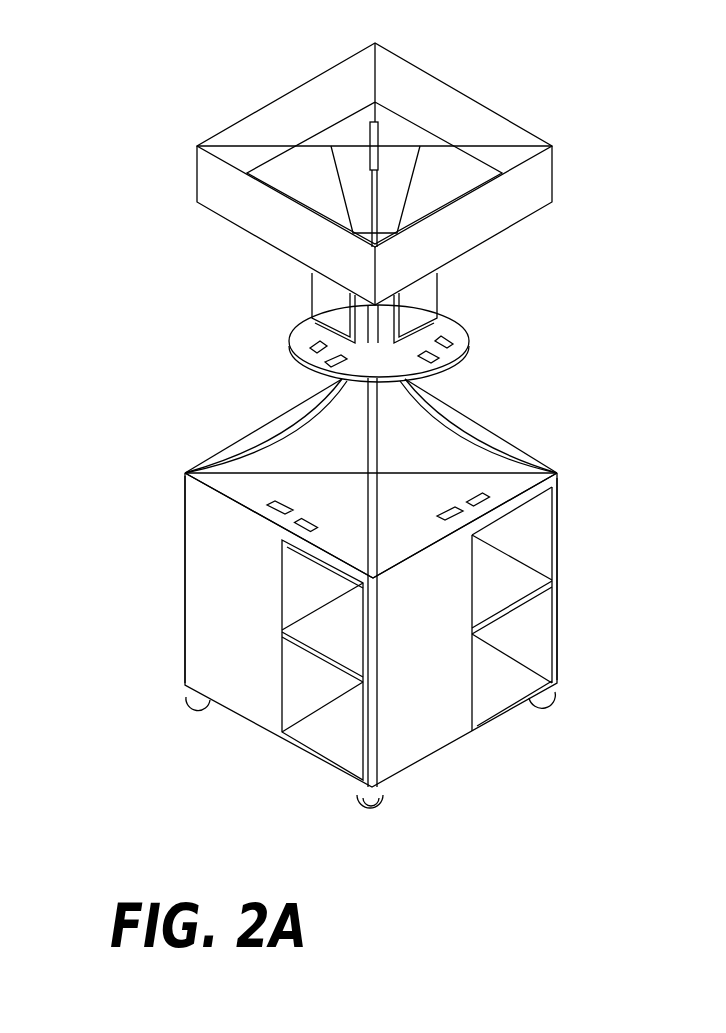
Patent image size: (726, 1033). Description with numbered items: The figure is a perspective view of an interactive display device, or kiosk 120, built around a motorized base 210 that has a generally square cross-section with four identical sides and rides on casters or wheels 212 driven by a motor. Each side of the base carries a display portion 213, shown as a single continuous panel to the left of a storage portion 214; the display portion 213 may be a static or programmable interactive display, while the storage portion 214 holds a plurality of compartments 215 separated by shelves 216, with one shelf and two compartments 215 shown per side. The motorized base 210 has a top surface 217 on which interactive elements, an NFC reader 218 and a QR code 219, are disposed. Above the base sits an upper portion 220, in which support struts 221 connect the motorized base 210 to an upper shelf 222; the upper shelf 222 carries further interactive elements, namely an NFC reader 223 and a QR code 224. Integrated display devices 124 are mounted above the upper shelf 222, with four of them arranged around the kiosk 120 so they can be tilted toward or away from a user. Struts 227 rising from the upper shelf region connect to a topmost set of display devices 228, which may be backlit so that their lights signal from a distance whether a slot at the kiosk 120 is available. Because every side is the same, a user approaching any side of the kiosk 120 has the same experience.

The kiosk 120 is at (136, 110).
The integrated display devices 124 is at (335, 305).
The motorized base 210 is at (576, 441).
The casters or wheels 212 is at (367, 813).
The display portion 213 is at (220, 688).
The storage portion 214 is at (555, 500).
The compartments 215 is at (538, 542).
The shelves 216 is at (520, 583).
The top surface 217 is at (463, 427).
The NFC reader 218 is at (442, 515).
The QR code 219 is at (480, 493).
The upper portion 220 is at (568, 285).
The support struts 221 is at (334, 428).
The upper shelf 222 is at (296, 327).
The NFC reader 223 is at (310, 346).
The QR code 224 is at (440, 343).
The struts 227 is at (395, 158).
The topmost display devices 228 is at (547, 180).